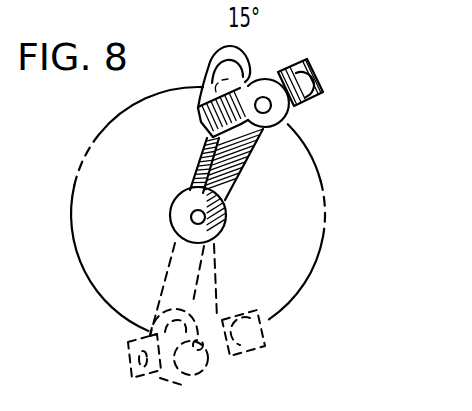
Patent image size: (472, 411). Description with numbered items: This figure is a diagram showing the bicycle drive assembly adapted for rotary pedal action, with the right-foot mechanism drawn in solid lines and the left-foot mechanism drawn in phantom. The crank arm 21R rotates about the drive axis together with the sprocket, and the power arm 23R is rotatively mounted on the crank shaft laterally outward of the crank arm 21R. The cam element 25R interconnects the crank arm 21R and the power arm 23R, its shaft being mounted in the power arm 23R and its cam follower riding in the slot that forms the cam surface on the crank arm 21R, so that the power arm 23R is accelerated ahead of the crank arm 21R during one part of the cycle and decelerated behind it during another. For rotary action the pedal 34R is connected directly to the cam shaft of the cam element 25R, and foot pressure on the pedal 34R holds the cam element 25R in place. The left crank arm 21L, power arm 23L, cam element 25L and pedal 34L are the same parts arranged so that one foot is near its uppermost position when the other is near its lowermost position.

The crank arm 21R is at (192, 148).
The power arm 23R is at (298, 213).
The cam element 25R is at (240, 63).
The pedal 34R is at (392, 95).
The crank arm 21L is at (173, 243).
The power arm 23L is at (287, 280).
The cam element 25L is at (148, 336).
The pedal 34L is at (320, 380).